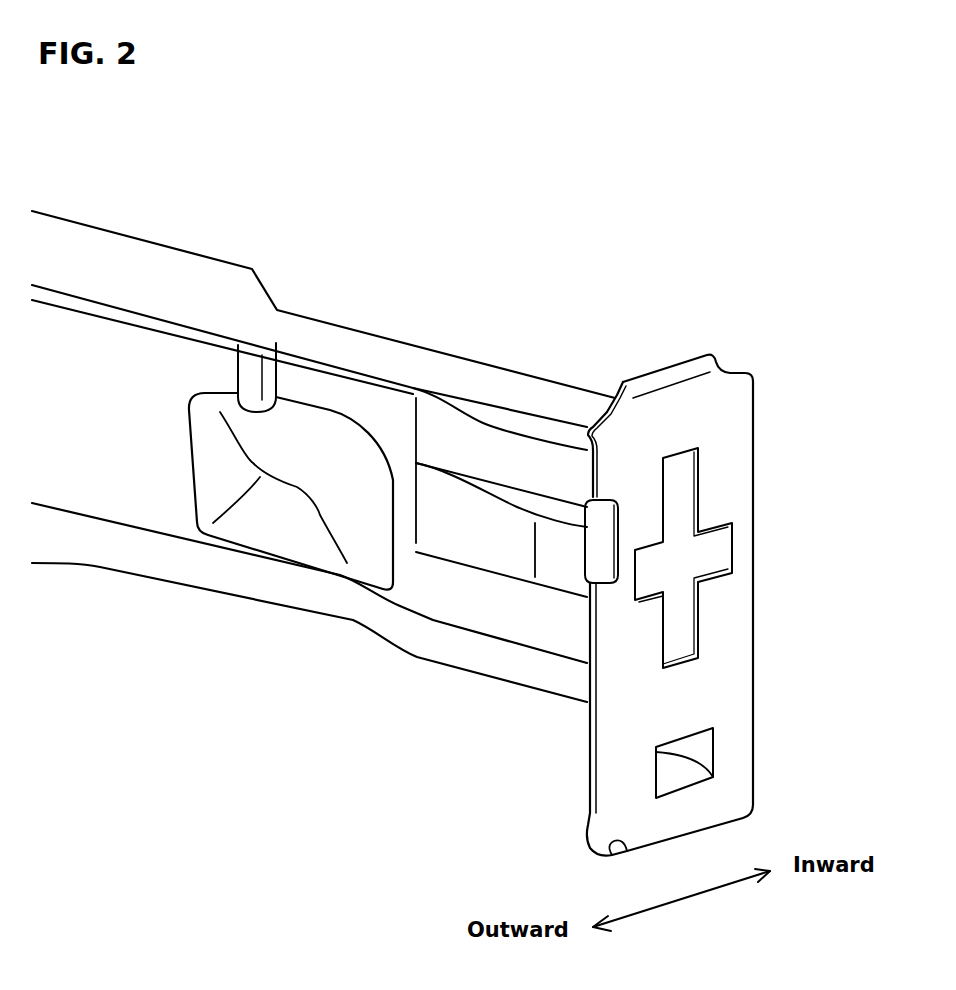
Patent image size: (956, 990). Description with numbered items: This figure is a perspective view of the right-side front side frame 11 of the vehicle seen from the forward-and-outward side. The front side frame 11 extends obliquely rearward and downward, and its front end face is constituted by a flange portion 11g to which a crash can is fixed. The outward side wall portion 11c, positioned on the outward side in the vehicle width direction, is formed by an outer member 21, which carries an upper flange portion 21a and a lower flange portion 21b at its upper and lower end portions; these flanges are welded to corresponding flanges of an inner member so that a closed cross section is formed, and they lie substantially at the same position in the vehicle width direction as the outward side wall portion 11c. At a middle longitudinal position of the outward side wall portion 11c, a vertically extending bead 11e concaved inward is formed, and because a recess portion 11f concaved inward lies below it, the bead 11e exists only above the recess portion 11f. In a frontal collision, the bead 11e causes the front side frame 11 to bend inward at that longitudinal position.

The front side frame 11 is at (536, 331).
The outward side wall portion 11c is at (167, 435).
The bead 11e is at (248, 363).
The recess portion 11f is at (293, 527).
The flange portion 11g is at (740, 426).
The outer member 21 is at (467, 603).
The flange portion 21a is at (437, 373).
The flange portion 21b is at (357, 617).